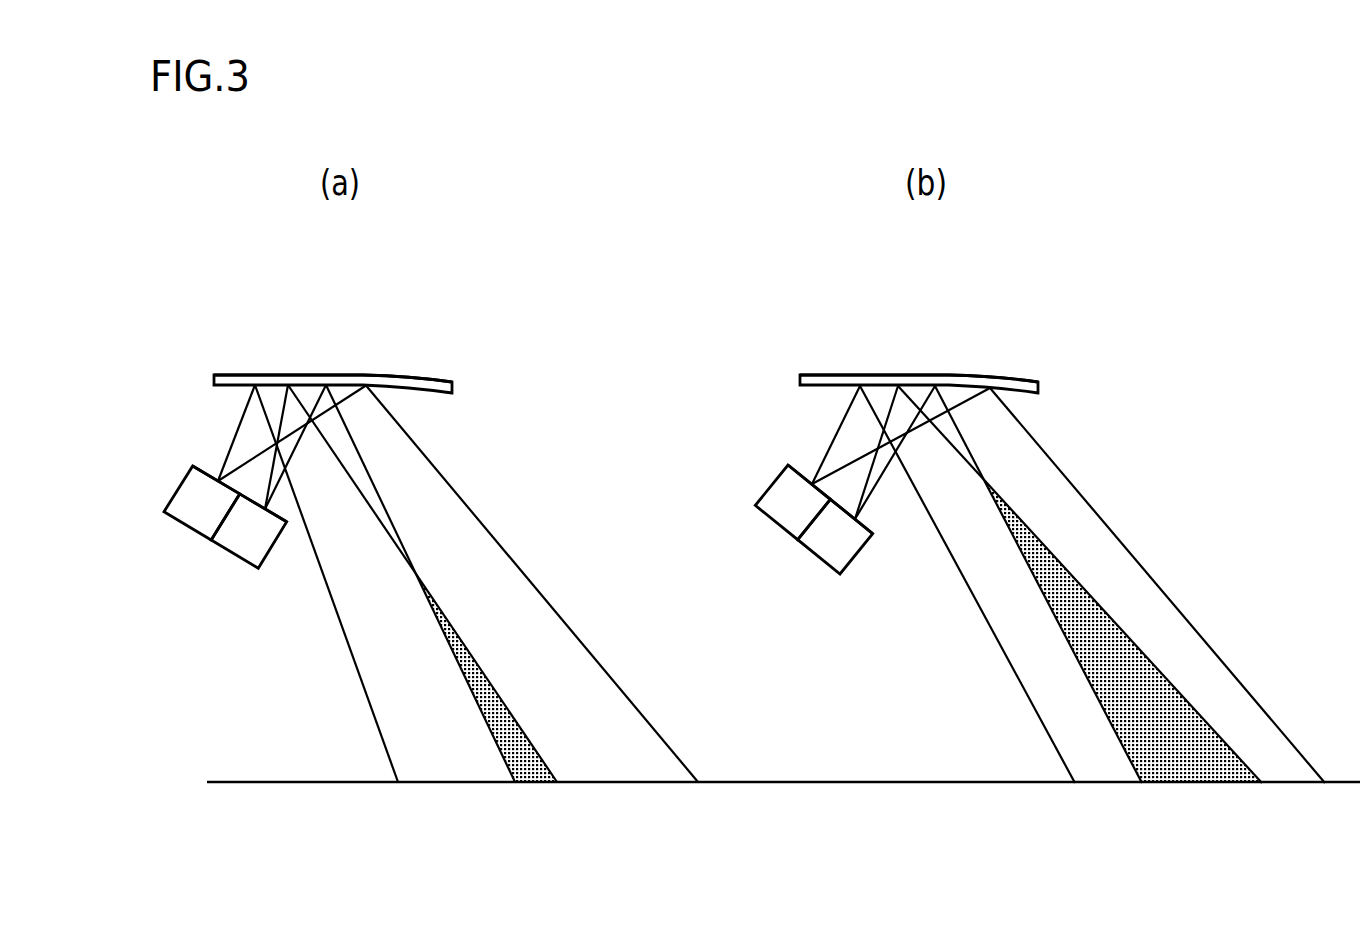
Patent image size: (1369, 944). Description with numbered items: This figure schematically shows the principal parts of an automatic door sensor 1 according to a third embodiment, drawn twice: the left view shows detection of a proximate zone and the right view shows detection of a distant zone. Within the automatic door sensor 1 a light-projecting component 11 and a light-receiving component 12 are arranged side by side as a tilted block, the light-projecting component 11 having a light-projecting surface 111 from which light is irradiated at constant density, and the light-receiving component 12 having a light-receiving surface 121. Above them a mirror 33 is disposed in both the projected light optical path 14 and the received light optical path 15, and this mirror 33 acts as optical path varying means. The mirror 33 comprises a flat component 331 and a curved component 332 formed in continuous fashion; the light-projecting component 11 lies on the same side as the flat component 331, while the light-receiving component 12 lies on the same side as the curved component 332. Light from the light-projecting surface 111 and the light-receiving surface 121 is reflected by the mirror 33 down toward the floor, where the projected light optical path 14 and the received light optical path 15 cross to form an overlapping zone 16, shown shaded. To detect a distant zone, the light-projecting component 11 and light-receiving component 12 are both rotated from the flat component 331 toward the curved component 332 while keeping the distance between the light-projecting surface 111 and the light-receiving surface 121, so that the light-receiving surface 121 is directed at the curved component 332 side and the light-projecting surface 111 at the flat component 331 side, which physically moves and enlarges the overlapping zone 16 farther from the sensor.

The automatic door sensor 1 is at (273, 235).
The light-projecting component 11 is at (188, 515).
The light-receiving component 12 is at (242, 543).
The light-projecting surface 111 is at (209, 453).
The light-receiving surface 121 is at (289, 506).
The mirror 33 is at (303, 375).
The flat component 331 is at (235, 372).
The curved component 332 is at (432, 378).
The projected light optical path 14 is at (387, 747).
The received light optical path 15 is at (617, 745).
The overlapping zone 16 is at (507, 748).